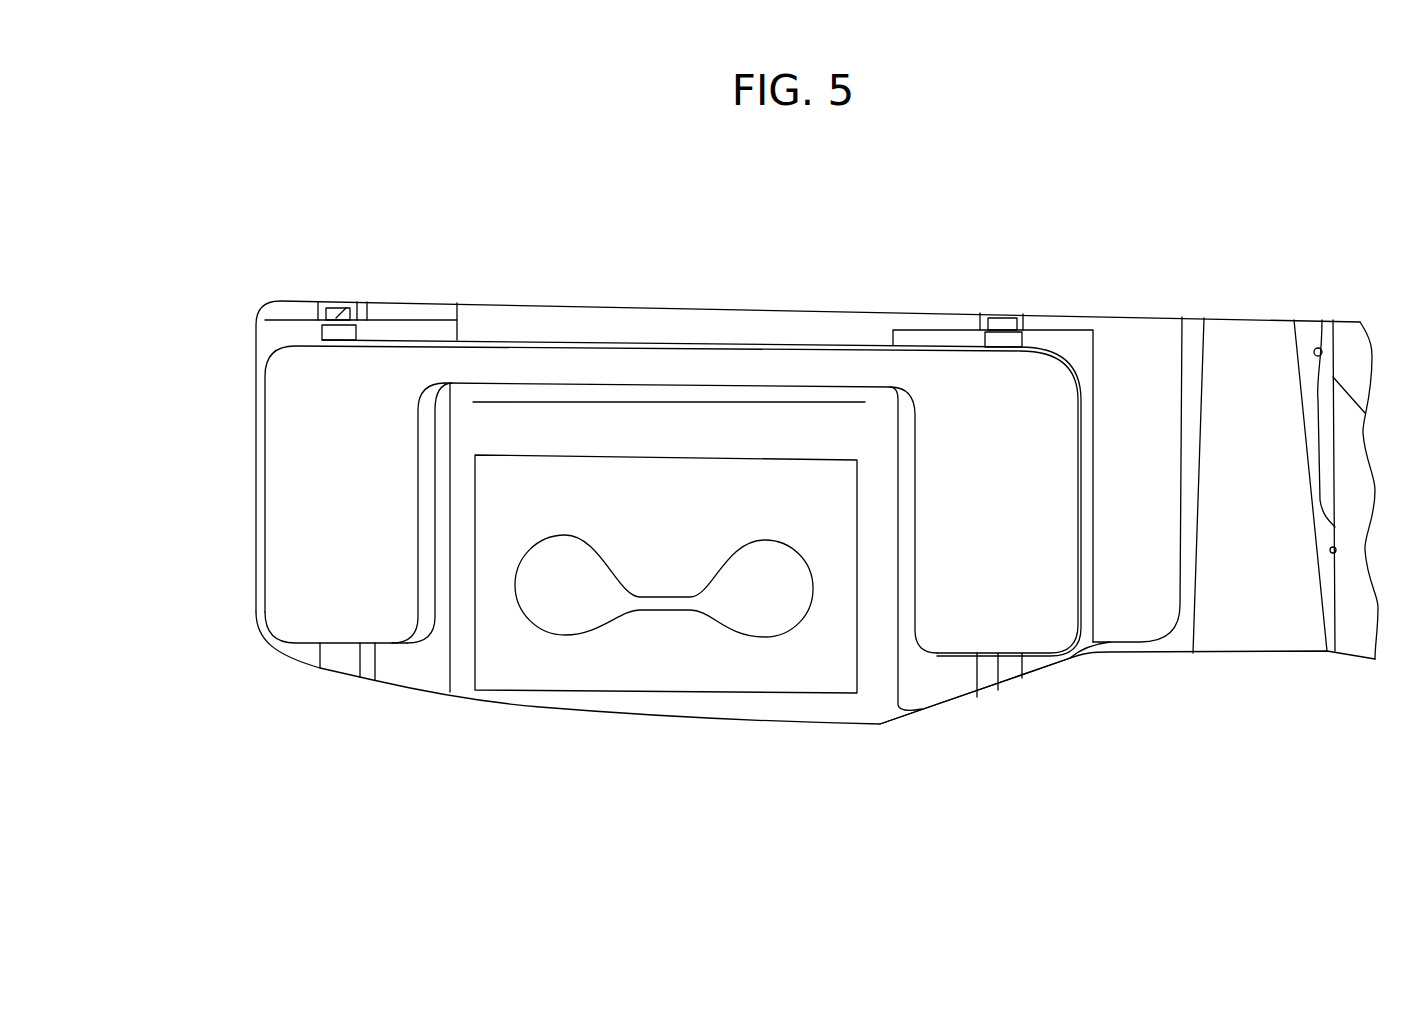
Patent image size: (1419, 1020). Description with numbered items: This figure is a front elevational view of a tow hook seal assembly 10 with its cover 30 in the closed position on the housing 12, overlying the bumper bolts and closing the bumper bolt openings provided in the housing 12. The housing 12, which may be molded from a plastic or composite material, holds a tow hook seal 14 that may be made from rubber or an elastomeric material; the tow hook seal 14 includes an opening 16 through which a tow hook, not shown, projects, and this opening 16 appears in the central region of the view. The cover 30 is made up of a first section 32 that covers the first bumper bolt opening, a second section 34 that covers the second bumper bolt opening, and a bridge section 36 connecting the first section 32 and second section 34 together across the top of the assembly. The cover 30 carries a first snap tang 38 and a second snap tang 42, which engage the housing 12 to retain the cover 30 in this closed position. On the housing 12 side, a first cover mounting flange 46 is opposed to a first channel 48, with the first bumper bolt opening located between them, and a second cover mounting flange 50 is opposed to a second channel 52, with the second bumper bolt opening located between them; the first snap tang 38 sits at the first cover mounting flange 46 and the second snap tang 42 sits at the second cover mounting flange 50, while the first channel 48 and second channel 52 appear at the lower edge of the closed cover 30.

The tow hook seal assembly 10 is at (1034, 214).
The housing 12 is at (426, 672).
The tow hook seal 14 is at (643, 667).
The opening 16 is at (758, 636).
The cover 30 is at (1070, 355).
The first section 32 is at (303, 527).
The second section 34 is at (1025, 617).
The bridge section 36 is at (688, 363).
The first snap tang 38 is at (350, 312).
The second snap tang 42 is at (1008, 325).
The first cover mounting flange 46 is at (328, 307).
The first channel 48 is at (340, 647).
The second cover mounting flange 50 is at (997, 317).
The second channel 52 is at (998, 658).